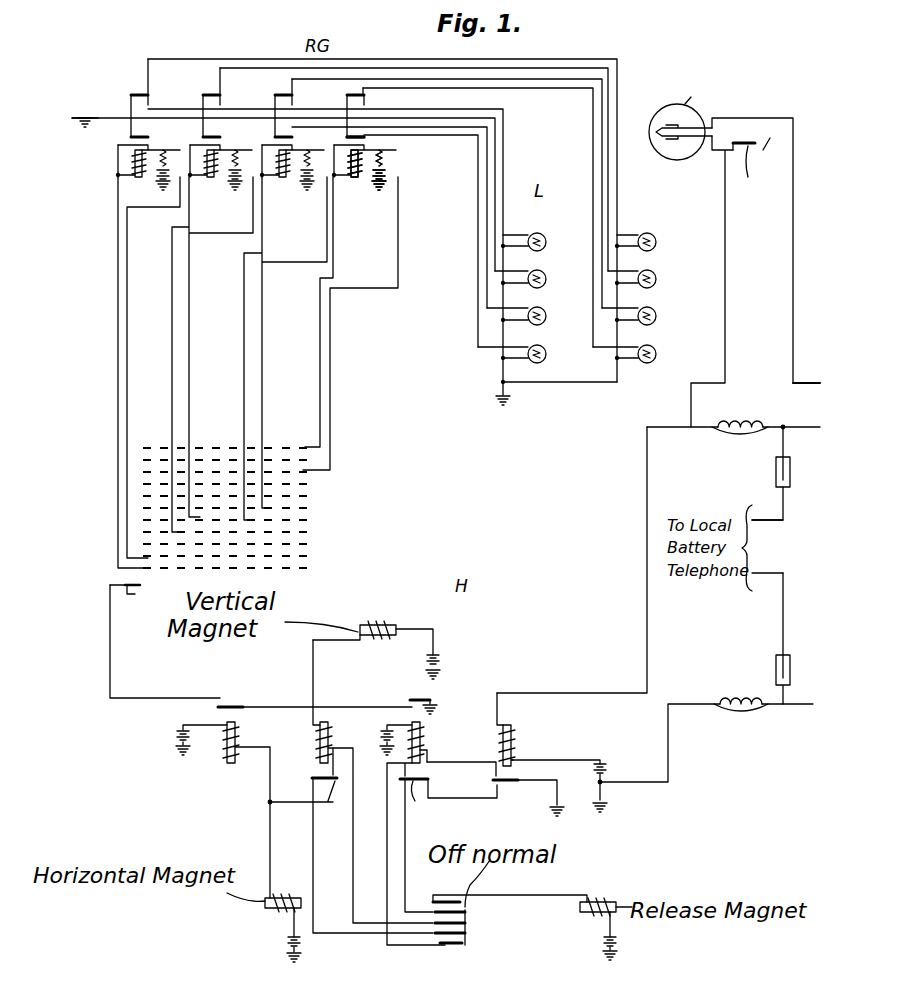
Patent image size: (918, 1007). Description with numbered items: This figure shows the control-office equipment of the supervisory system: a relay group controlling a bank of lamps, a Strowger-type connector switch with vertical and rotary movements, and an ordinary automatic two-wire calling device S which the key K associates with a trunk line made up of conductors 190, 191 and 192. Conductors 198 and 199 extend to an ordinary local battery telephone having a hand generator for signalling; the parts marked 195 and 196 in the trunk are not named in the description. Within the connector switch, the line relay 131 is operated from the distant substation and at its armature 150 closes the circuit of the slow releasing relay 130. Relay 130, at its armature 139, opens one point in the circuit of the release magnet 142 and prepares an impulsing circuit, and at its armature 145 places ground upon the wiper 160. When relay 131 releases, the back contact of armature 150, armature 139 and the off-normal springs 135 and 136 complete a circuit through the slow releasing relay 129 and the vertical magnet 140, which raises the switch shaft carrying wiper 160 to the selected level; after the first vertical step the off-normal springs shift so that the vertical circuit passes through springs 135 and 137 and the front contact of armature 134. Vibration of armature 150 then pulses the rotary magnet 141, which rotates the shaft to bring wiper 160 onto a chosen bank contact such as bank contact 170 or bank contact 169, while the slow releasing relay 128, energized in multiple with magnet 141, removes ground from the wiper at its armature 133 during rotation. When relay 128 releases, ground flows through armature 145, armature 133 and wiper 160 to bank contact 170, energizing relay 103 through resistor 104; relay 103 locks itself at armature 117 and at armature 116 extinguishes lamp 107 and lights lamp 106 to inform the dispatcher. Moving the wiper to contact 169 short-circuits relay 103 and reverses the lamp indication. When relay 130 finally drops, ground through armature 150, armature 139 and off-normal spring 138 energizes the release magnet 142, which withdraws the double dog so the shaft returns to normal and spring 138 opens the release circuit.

The relay 103 is at (355, 178).
The resistor 104 is at (382, 151).
The lamp 106 is at (556, 346).
The lamp 107 is at (665, 342).
The armature 116 is at (371, 100).
The armature 117 is at (366, 139).
The slow releasing relay 128 is at (240, 737).
The slow releasing relay 129 is at (328, 738).
The slow releasing relay 130 is at (422, 738).
The line relay 131 is at (513, 738).
The armature 133 is at (233, 705).
The armature 134 is at (330, 803).
The off-normal spring 135 is at (465, 938).
The off-normal spring 136 is at (467, 924).
The off-normal spring 137 is at (440, 945).
The off-normal spring 138 is at (467, 913).
The armature 139 is at (411, 801).
The vertical magnet 140 is at (375, 628).
The rotary magnet 141 is at (280, 898).
The release magnet 142 is at (612, 903).
The armature 145 is at (424, 702).
The armature 150 is at (506, 785).
The wiper 160 is at (136, 600).
The bank contact 169 is at (307, 468).
The bank contact 170 is at (305, 447).
The trunk conductor 190 is at (812, 382).
The trunk conductor 191 is at (795, 426).
The trunk conductor 192 is at (810, 696).
The induction coil 195 is at (738, 423).
The induction coil 196 is at (738, 702).
The conductor 198 is at (762, 521).
The conductor 199 is at (770, 571).
The calling device S is at (680, 119).
The key K is at (751, 169).